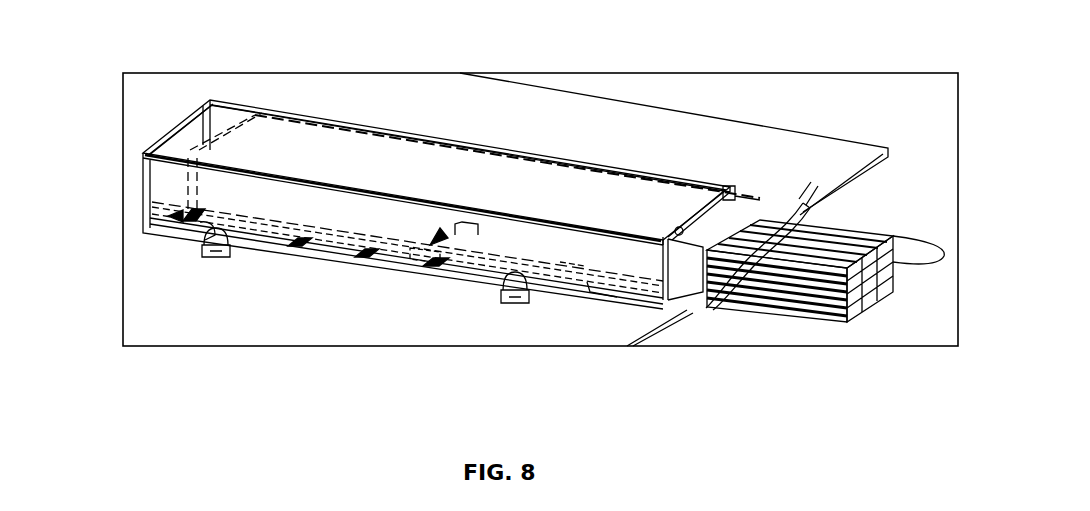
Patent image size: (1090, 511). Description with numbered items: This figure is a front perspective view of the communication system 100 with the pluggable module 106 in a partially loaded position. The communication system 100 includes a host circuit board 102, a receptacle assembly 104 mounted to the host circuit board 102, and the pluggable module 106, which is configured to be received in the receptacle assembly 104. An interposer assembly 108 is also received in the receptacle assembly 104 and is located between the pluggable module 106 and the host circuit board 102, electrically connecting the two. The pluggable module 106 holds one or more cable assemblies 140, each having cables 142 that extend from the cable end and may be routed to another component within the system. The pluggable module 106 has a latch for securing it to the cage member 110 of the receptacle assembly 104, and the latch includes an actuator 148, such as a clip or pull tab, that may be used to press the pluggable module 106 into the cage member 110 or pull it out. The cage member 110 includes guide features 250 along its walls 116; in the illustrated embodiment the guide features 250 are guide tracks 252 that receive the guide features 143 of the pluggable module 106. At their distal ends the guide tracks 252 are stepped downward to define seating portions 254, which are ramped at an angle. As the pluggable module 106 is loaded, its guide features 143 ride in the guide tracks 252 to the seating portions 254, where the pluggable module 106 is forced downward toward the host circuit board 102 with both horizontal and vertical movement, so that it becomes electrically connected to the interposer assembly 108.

The communication system 100 is at (582, 46).
The host circuit board 102 is at (725, 130).
The receptacle assembly 104 is at (190, 128).
The pluggable module 106 is at (699, 297).
The interposer assembly 108 is at (328, 250).
The cage member 110 is at (147, 190).
The walls 116 is at (362, 212).
The cable assemblies 140 is at (778, 320).
The cables 142 is at (820, 315).
The guide features 143 is at (470, 222).
The actuator 148 is at (806, 203).
The guide features 250 is at (563, 262).
The guide tracks 252 is at (678, 267).
The seating portions 254 is at (147, 220).